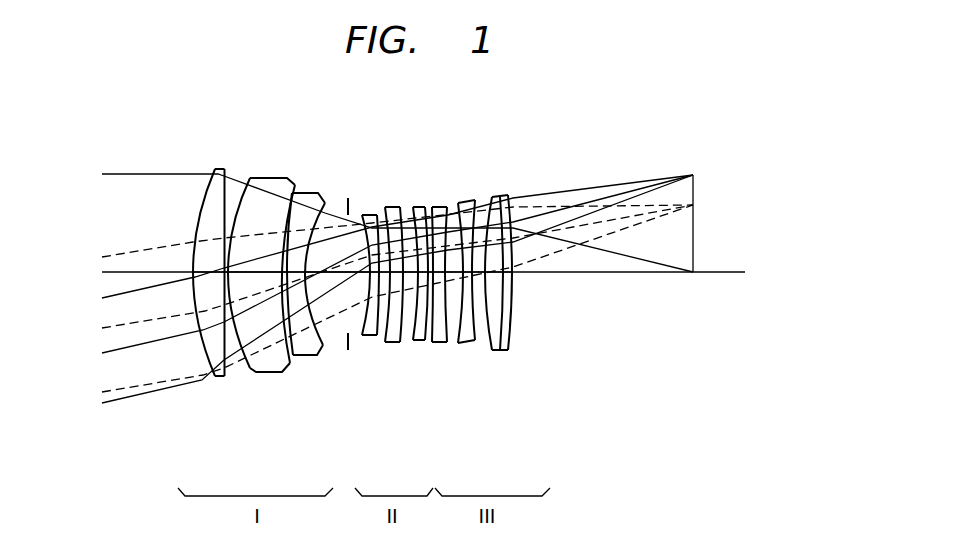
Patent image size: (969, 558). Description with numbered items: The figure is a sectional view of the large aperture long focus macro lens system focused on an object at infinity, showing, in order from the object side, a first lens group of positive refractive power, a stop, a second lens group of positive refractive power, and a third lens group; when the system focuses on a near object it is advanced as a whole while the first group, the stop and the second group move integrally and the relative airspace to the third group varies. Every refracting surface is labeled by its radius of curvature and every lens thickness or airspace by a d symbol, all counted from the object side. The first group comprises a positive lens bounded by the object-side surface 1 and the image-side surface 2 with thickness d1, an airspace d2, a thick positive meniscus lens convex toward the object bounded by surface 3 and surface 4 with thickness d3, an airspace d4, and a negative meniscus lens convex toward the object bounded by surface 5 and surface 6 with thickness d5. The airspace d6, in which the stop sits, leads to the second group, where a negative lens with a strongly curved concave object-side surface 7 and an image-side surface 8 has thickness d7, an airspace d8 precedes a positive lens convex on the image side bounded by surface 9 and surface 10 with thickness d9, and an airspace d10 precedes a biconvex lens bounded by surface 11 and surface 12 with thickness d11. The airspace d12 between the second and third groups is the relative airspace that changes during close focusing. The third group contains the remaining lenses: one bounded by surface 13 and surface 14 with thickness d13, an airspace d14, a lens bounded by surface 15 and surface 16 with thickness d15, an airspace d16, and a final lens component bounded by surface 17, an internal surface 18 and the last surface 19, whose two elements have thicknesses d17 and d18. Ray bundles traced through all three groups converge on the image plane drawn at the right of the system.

The first lens surface 1 is at (206, 355).
The second lens surface 2 is at (220, 377).
The third lens surface 3 is at (251, 370).
The fourth lens surface 4 is at (287, 366).
The fifth lens surface 5 is at (294, 356).
The sixth lens surface 6 is at (322, 350).
The seventh lens surface 7 is at (362, 337).
The eighth lens surface 8 is at (377, 337).
The ninth lens surface 9 is at (385, 344).
The tenth lens surface 10 is at (401, 344).
The eleventh lens surface 11 is at (412, 342).
The twelfth lens surface 12 is at (424, 342).
The thirteenth lens surface 13 is at (432, 344).
The fourteenth lens surface 14 is at (447, 343).
The fifteenth lens surface 15 is at (459, 345).
The sixteenth lens surface 16 is at (474, 342).
The seventeenth lens surface 17 is at (491, 351).
The eighteenth lens surface 18 is at (503, 352).
The nineteenth lens surface 19 is at (509, 351).
The thickness of the first lens d1 is at (212, 270).
The first airspace d2 is at (226, 268).
The thickness of the second lens d3 is at (258, 268).
The second airspace d4 is at (284, 282).
The thickness of the third lens d5 is at (302, 215).
The airspace between the first and second lens groups d6 is at (340, 225).
The thickness of the fourth lens d7 is at (372, 272).
The airspace in the second lens group d8 is at (370, 213).
The thickness of the fifth lens d9 is at (388, 210).
The airspace in the second lens group d10 is at (406, 210).
The thickness of the sixth lens d11 is at (416, 212).
The airspace between the second and third lens groups d12 is at (430, 212).
The thickness of the seventh lens d13 is at (440, 210).
The airspace in the third lens group d14 is at (452, 210).
The thickness of the eighth lens d15 is at (467, 206).
The airspace in the third lens group d16 is at (484, 204).
The thickness of the ninth lens element d17 is at (488, 283).
The thickness of the last lens element d18 is at (500, 280).